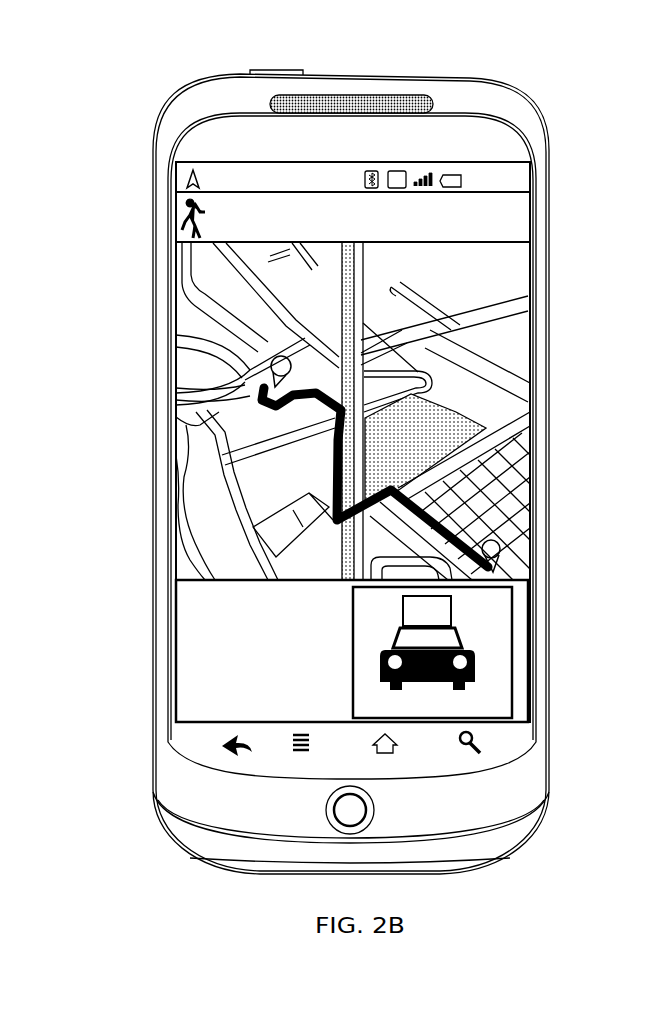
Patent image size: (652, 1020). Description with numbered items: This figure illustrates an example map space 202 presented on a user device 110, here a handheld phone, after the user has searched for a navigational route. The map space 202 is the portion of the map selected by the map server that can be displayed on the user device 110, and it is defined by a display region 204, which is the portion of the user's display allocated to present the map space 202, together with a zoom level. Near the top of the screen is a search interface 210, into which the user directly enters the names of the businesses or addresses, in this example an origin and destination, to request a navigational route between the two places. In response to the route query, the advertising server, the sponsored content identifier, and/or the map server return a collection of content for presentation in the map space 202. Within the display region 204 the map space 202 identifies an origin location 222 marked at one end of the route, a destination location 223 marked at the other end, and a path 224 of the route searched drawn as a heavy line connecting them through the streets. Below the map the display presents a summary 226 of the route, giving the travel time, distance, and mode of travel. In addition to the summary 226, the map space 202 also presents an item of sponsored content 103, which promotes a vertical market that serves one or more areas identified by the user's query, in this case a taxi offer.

The user device 110 is at (128, 58).
The map space 202 is at (152, 285).
The display region 204 is at (178, 302).
The search interface 210 is at (176, 203).
The origin location 222 is at (272, 372).
The path 224 is at (340, 446).
The destination location 223 is at (500, 540).
The summary 226 is at (178, 704).
The sponsored content 103 is at (512, 684).